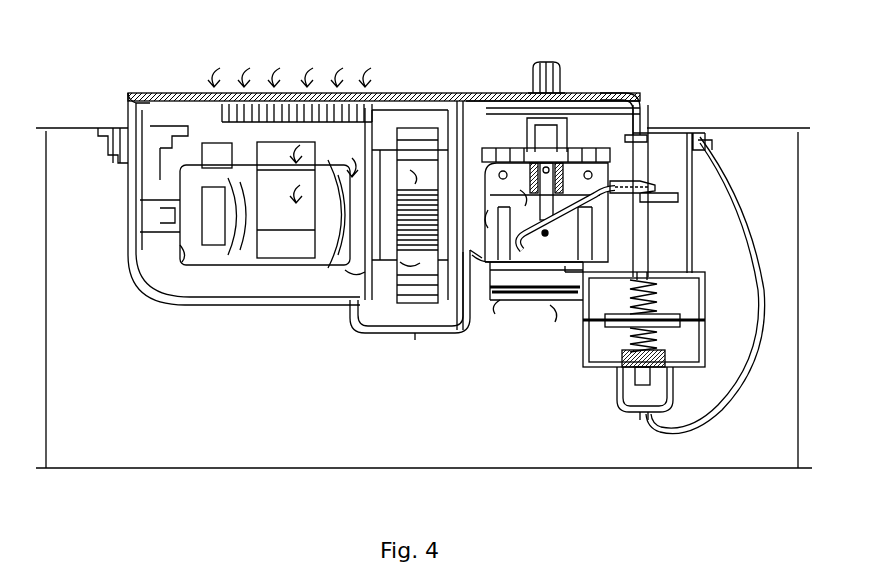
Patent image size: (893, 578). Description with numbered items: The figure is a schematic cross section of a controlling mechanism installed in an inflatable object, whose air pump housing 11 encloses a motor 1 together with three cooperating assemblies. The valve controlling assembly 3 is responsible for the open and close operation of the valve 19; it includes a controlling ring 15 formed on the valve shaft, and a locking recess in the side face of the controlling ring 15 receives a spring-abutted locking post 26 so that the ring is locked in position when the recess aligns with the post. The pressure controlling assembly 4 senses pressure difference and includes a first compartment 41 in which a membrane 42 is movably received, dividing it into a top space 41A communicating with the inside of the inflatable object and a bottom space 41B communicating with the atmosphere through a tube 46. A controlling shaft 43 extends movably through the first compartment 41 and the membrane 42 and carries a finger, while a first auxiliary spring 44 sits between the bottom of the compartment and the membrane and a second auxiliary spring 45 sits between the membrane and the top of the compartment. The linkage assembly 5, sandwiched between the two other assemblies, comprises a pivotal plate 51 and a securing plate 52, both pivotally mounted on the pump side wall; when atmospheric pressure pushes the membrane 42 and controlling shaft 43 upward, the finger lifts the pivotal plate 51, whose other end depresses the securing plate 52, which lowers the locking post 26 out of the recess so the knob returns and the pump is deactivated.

The housing 11 is at (108, 270).
The motor 1 is at (259, 201).
The valve controlling assembly 3 is at (553, 63).
The controlling ring 15 is at (518, 155).
The locking post 26 is at (548, 175).
The securing plate 52 is at (612, 182).
The pivotal plate 51 is at (653, 185).
The controlling shaft 43 is at (651, 239).
The top space 41A is at (689, 289).
The first compartment 41 is at (695, 300).
The membrane 42 is at (695, 320).
The pressure controlling assembly 4 is at (689, 340).
The bottom space 41B is at (678, 352).
The tube 46 is at (718, 410).
The first auxiliary spring 44 is at (628, 340).
The second auxiliary spring 45 is at (630, 292).
The linkage assembly 5 is at (538, 262).
The valve 19 is at (549, 287).